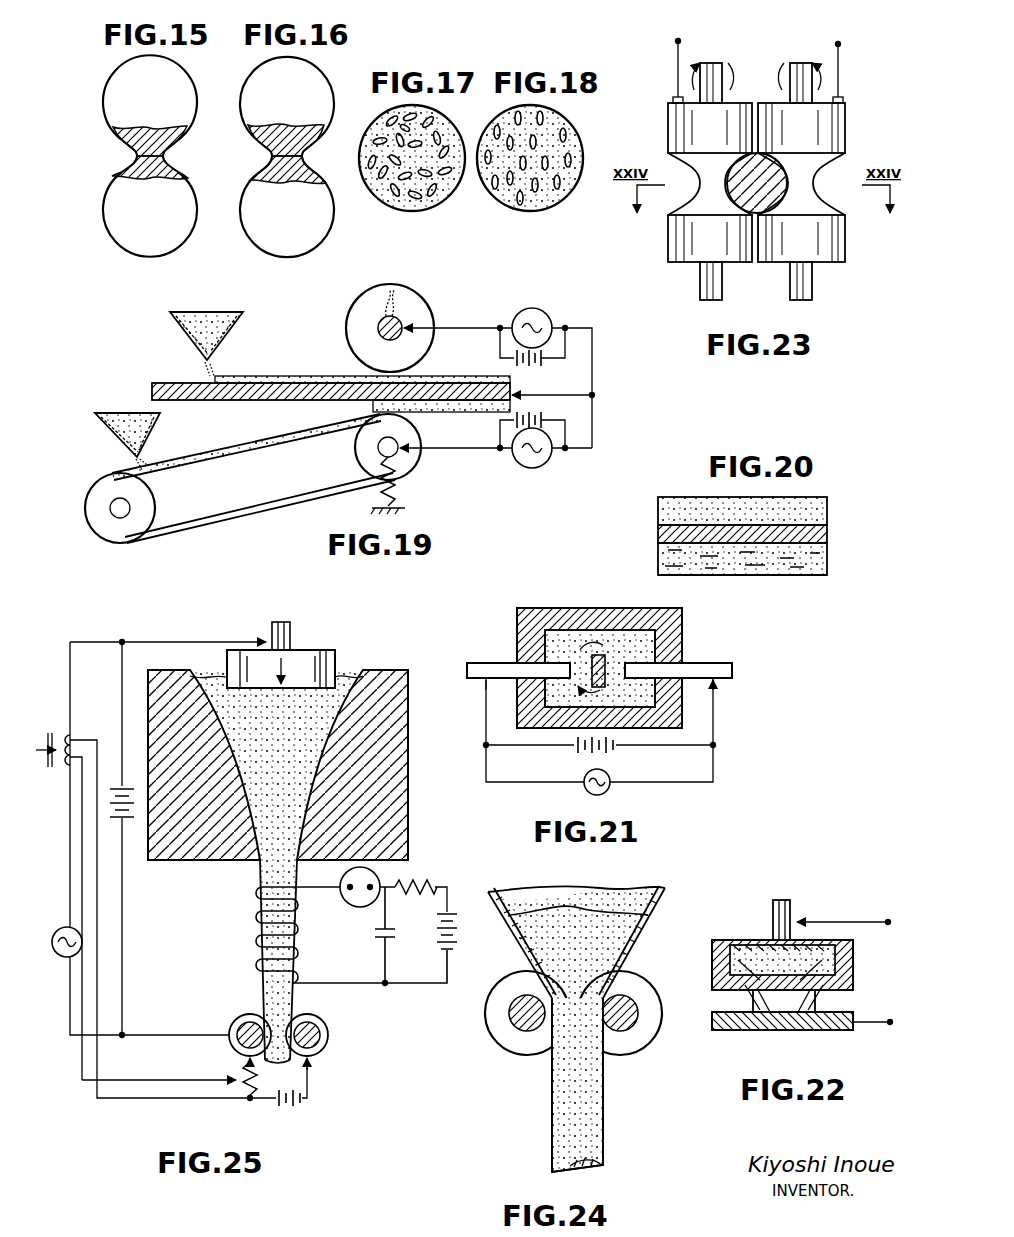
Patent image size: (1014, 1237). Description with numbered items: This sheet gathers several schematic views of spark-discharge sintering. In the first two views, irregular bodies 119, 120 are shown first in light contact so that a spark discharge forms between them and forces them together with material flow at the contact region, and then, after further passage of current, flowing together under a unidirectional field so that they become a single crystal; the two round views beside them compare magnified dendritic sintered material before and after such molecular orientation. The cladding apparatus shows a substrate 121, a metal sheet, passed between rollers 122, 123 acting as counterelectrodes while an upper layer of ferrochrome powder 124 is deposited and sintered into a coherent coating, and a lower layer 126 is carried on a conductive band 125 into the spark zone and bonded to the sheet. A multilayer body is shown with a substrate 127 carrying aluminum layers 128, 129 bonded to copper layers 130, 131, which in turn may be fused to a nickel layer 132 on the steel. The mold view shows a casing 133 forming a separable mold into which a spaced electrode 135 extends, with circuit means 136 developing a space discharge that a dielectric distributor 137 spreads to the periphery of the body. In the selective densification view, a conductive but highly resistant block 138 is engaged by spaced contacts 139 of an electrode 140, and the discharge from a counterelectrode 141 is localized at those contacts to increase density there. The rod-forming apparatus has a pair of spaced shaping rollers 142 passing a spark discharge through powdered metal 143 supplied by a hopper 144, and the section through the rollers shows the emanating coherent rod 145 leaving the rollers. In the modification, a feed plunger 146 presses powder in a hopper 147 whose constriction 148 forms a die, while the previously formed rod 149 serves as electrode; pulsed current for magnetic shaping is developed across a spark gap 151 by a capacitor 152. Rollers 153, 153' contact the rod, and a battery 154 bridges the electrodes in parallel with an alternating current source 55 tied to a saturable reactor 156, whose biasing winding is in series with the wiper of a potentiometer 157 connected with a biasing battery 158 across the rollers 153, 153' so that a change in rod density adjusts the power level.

In FIG. 15, the body 119 is at (103, 197).
In FIG. 16, the body 119 is at (243, 228).
In FIG. 15, the body 120 is at (110, 84).
In FIG. 16, the body 120 is at (244, 84).
In FIG. 19, the substrate 121 is at (226, 402).
In FIG. 19, the roller 122 is at (416, 299).
In FIG. 19, the roller 123 is at (409, 463).
In FIG. 19, the ferrochrome powder 124 is at (240, 376).
In FIG. 19, the conductive band 125 is at (254, 442).
In FIG. 19, the lower layer 126 is at (446, 413).
In FIG. 20, the substrate 127 is at (658, 530).
In FIG. 20, the aluminum layer 128 is at (827, 575).
In FIG. 20, the aluminum layer 129 is at (827, 503).
In FIG. 20, the copper layer 130 is at (827, 526).
In FIG. 20, the copper layer 131 is at (827, 556).
In FIG. 20, the nickel layer 132 is at (658, 548).
In FIG. 21, the casing 133 is at (562, 612).
In FIG. 21, the electrode 135 is at (712, 664).
In FIG. 21, the circuit means 136 is at (612, 781).
In FIG. 21, the dielectric distributor 137 is at (606, 662).
In FIG. 22, the block 138 is at (853, 967).
In FIG. 22, the contacts 139 is at (805, 1001).
In FIG. 22, the electrode 140 is at (750, 1031).
In FIG. 22, the counterelectrode 141 is at (792, 910).
In FIG. 23, the shaping rollers 142 is at (785, 258).
In FIG. 24, the shaping rollers 142 is at (650, 1040).
In FIG. 23, the powdered metal 143 is at (776, 166).
In FIG. 24, the powdered metal 143 is at (614, 951).
In FIG. 24, the hopper 144 is at (637, 928).
In FIG. 24, the compacted strand 145 is at (596, 1106).
In FIG. 25, the feed plunger 146 is at (318, 650).
In FIG. 25, the hopper 147 is at (345, 676).
In FIG. 25, the constriction 148 is at (351, 924).
In FIG. 25, the rod 149 is at (292, 1008).
In FIG. 25, the spark gap 151 is at (360, 907).
In FIG. 25, the capacitor 152 is at (380, 940).
In FIG. 25, the roller 153 is at (331, 1035).
In FIG. 25, the roller 153' is at (237, 1023).
In FIG. 25, the battery 154 is at (127, 820).
In FIG. 25, the AC source 55 is at (58, 955).
In FIG. 25, the saturable reactor 156 is at (68, 735).
In FIG. 25, the potentiometer 157 is at (245, 1100).
In FIG. 25, the biasing battery 158 is at (300, 1103).